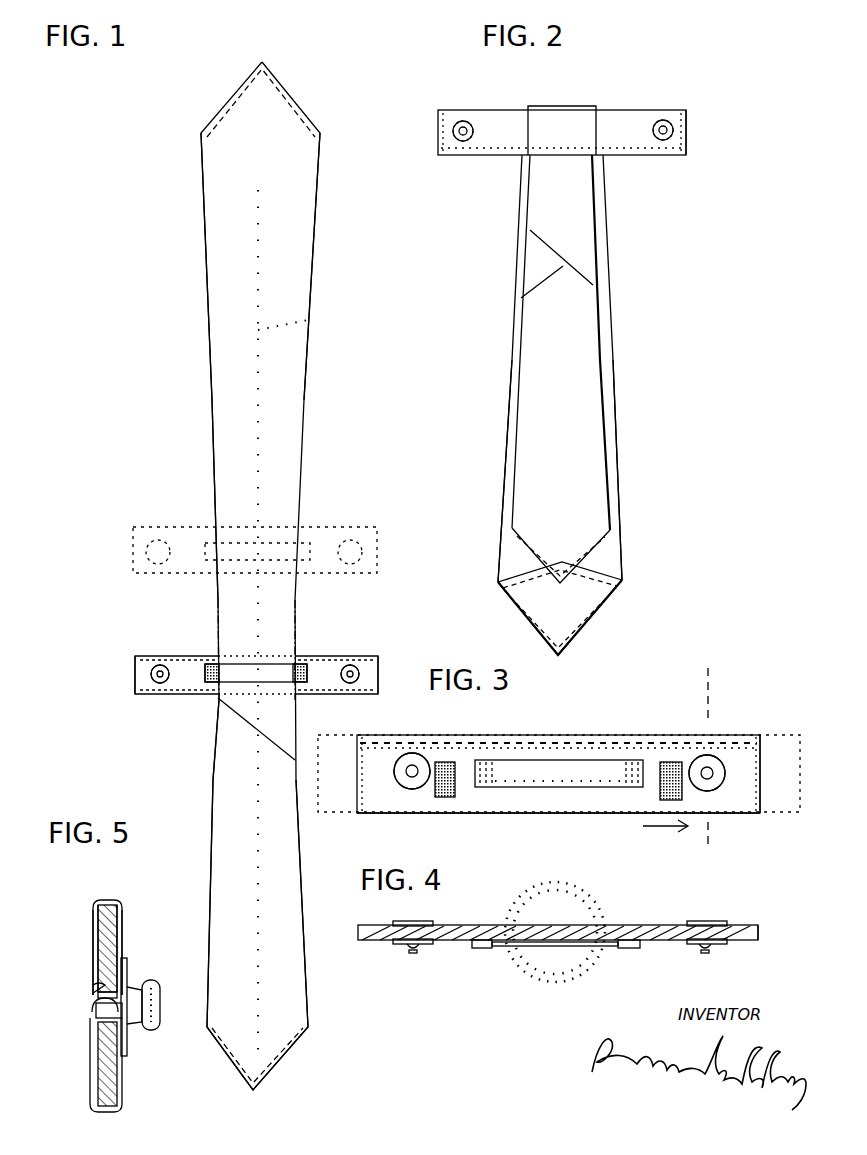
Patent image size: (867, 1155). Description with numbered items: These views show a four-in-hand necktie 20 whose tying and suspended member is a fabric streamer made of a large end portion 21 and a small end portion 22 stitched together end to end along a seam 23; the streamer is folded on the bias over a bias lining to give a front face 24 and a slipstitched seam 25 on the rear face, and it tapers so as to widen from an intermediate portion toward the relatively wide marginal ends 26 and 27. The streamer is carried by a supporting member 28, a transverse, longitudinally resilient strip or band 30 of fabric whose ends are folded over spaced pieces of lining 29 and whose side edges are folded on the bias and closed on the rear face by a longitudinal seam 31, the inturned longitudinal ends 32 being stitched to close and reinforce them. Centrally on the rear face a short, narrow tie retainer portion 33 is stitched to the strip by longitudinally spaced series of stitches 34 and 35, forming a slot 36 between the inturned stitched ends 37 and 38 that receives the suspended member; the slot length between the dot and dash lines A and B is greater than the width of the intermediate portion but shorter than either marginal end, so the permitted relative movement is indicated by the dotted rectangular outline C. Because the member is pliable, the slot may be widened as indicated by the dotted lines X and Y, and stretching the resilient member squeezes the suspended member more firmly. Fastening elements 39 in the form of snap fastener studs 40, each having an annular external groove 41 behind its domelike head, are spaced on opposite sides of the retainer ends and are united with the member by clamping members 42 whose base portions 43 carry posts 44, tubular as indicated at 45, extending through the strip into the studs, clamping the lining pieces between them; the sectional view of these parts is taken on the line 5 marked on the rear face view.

In FIG. 1, the four-in-hand necktie 20 is at (201, 222).
In FIG. 2, the four-in-hand necktie 20 is at (566, 106).
In FIG. 1, the large end portion 21 is at (205, 290).
In FIG. 2, the large end portion 21 is at (508, 377).
In FIG. 1, the small end portion 22 is at (210, 802).
In FIG. 2, the small end portion 22 is at (608, 336).
In FIG. 1, the seam 23 is at (231, 727).
In FIG. 2, the seam 23 is at (521, 298).
In FIG. 1, the front face 24 is at (228, 345).
In FIG. 1, the slipstitched seam 25 is at (312, 318).
In FIG. 1, the wide marginal end 26 is at (318, 200).
In FIG. 2, the wide marginal end 26 is at (622, 544).
In FIG. 1, the wide marginal end 27 is at (308, 1020).
In FIG. 2, the wide marginal end 27 is at (510, 495).
In FIG. 1, the supporting member 28 is at (137, 658).
In FIG. 2, the supporting member 28 is at (494, 109).
In FIG. 3, the supporting member 28 is at (462, 742).
In FIG. 4, the supporting member 28 is at (470, 912).
In FIG. 5, the supporting member 28 is at (93, 1105).
In FIG. 3, the pieces of lining 29 is at (445, 797).
In FIG. 5, the pieces of lining 29 is at (105, 900).
In FIG. 1, the strip or band 30 is at (135, 680).
In FIG. 5, the strip or band 30 is at (95, 910).
In FIG. 1, the longitudinal seam 31 is at (352, 658).
In FIG. 2, the longitudinal seam 31 is at (660, 155).
In FIG. 3, the longitudinal seam 31 is at (744, 738).
In FIG. 4, the longitudinal seam 31 is at (760, 938).
In FIG. 5, the longitudinal seam 31 is at (118, 908).
In FIG. 1, the inturned longitudinal ends 32 is at (378, 664).
In FIG. 3, the inturned longitudinal ends 32 is at (757, 761).
In FIG. 5, the inturned longitudinal ends 32 is at (122, 924).
In FIG. 1, the tie retainer portion 33 is at (289, 684).
In FIG. 3, the tie retainer portion 33 is at (557, 788).
In FIG. 4, the tie retainer portion 33 is at (520, 946).
In FIG. 1, the series of stitches 34 is at (206, 682).
In FIG. 3, the series of stitches 34 is at (496, 792).
In FIG. 1, the series of stitches 35 is at (300, 670).
In FIG. 3, the series of stitches 35 is at (622, 792).
In FIG. 4, the slot 36 is at (585, 915).
In FIG. 4, the inturned stitched end 37 is at (474, 948).
In FIG. 4, the inturned stitched end 38 is at (628, 946).
In FIG. 1, the fastening elements 39 is at (150, 681).
In FIG. 3, the fastening elements 39 is at (400, 787).
In FIG. 4, the fastening elements 39 is at (389, 942).
In FIG. 5, the fastening elements 39 is at (127, 960).
In FIG. 1, the snap fastener studs 40 is at (160, 672).
In FIG. 3, the snap fastener studs 40 is at (412, 770).
In FIG. 4, the snap fastener studs 40 is at (410, 948).
In FIG. 5, the snap fastener studs 40 is at (145, 1027).
In FIG. 4, the annular external groove 41 is at (417, 954).
In FIG. 5, the annular external groove 41 is at (135, 1042).
In FIG. 2, the clamping members 42 is at (452, 131).
In FIG. 4, the clamping members 42 is at (388, 923).
In FIG. 5, the clamping members 42 is at (92, 958).
In FIG. 2, the base portions 43 is at (672, 124).
In FIG. 5, the base portions 43 is at (94, 995).
In FIG. 5, the posts 44 is at (94, 1002).
In FIG. 2, the tubular portion 45 is at (460, 140).
In FIG. 5, the tubular portion 45 is at (100, 1010).
In FIG. 3, the section line 5— 5 is at (678, 758).
In FIG. 1, the dot and dash line A is at (218, 605).
In FIG. 1, the dot and dash line B is at (296, 602).
In FIG. 1, the dotted rectangular outline C is at (330, 525).
In FIG. 4, the dotted line X is at (556, 904).
In FIG. 4, the dotted line Y is at (585, 964).